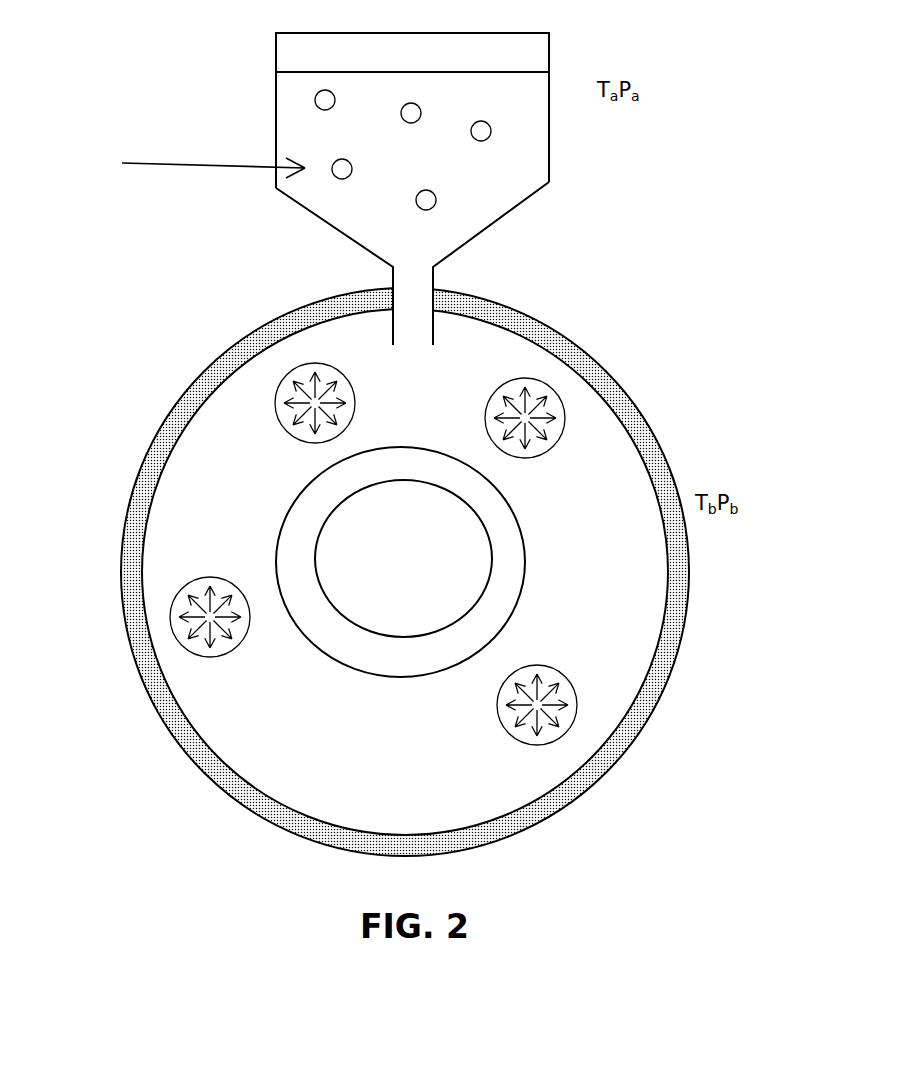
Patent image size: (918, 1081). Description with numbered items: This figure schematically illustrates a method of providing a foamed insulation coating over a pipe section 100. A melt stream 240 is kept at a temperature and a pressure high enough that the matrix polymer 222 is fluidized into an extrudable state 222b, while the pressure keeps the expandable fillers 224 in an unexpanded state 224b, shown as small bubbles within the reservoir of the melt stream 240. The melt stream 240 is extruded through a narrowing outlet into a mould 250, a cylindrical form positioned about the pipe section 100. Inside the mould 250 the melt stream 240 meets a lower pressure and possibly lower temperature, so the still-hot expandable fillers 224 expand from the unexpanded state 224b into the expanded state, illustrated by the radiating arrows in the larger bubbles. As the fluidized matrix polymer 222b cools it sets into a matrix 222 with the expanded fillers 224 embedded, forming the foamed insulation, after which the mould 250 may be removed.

The pipe section 100 is at (498, 590).
The matrix polymer 222 is at (222, 449).
The extrudable state of the matrix polymer 222b is at (490, 200).
The expandable fillers 224 is at (187, 603).
The unexpanded state of the expandable fillers 224b is at (322, 99).
The melt stream 240 is at (183, 163).
The mould 250 is at (235, 354).